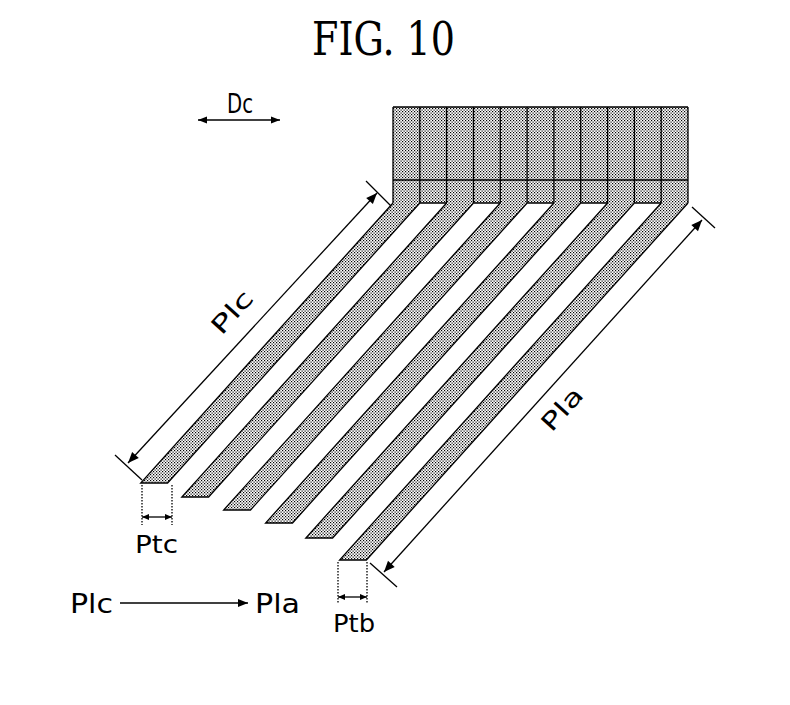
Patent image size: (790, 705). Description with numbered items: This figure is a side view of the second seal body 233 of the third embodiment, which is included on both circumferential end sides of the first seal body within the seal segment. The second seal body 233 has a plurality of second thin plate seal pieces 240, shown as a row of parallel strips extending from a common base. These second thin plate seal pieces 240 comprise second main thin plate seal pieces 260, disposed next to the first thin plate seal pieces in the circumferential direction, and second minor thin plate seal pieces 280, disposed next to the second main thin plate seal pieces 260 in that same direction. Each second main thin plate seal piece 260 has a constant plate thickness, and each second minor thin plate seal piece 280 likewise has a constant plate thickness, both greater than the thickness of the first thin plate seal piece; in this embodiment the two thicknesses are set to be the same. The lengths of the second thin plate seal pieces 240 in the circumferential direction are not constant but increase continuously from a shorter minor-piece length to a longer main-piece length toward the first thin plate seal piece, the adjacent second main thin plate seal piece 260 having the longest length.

The second seal body 233 is at (134, 240).
The second thin plate seal pieces 240 is at (356, 370).
The second minor thin plate seal piece 280 is at (200, 427).
The second main thin plate seal piece 260 is at (453, 462).